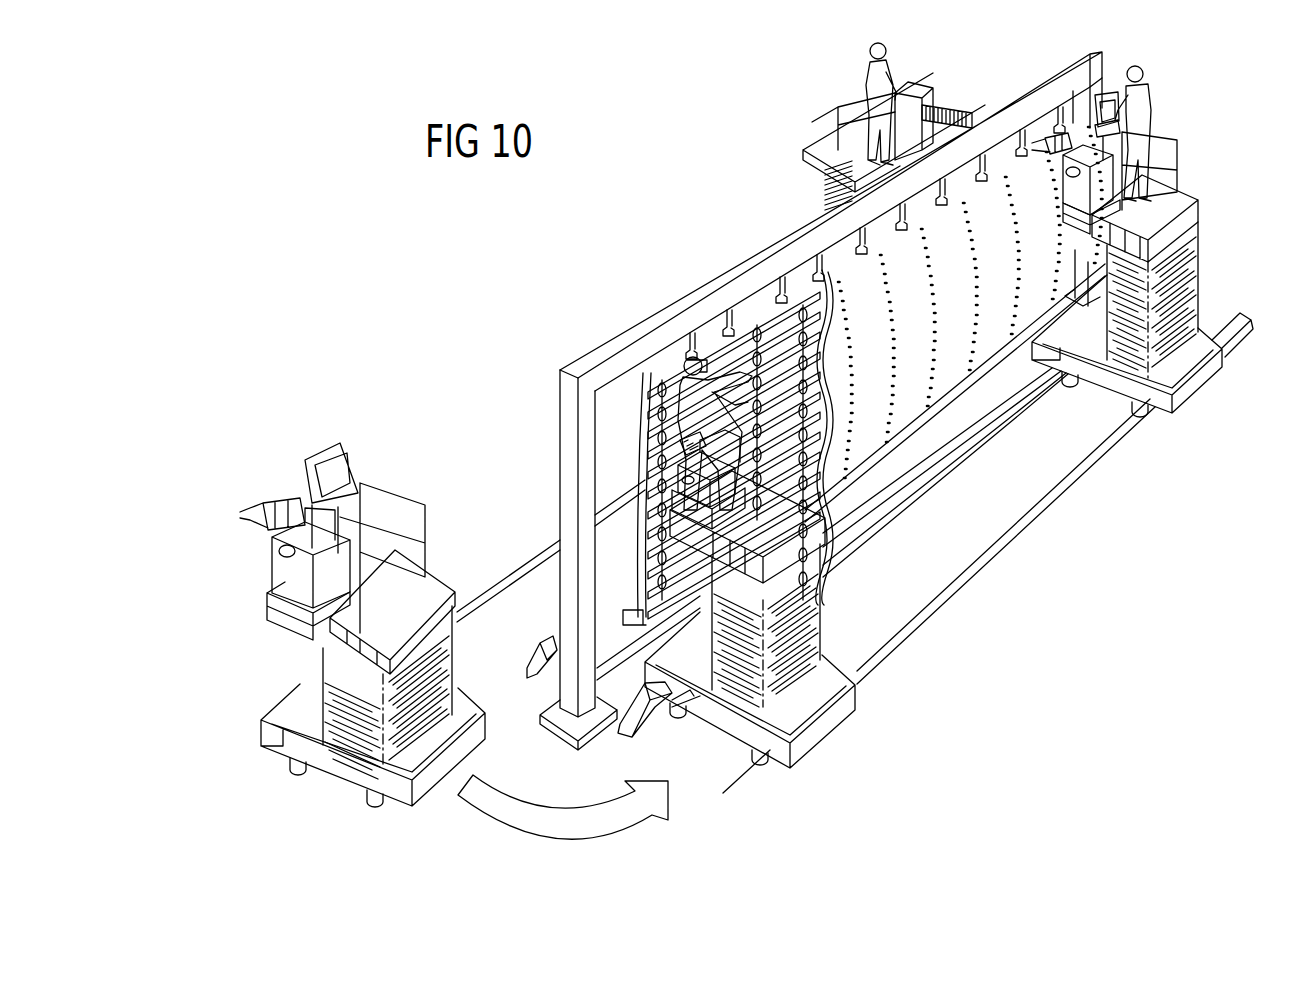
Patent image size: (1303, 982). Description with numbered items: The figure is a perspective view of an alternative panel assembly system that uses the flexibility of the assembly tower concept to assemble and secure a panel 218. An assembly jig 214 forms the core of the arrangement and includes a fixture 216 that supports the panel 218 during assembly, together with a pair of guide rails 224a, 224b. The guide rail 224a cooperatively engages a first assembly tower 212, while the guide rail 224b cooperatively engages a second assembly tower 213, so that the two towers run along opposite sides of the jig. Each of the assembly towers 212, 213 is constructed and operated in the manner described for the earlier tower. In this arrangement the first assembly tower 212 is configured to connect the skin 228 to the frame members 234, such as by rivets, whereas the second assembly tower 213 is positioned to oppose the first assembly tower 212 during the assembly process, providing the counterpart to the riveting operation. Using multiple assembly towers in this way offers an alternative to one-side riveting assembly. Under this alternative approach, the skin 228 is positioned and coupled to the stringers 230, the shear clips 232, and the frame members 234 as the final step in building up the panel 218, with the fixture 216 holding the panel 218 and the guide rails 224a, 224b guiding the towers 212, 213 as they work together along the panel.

The first assembly tower 212 is at (1163, 104).
The second assembly tower 213 is at (820, 135).
The assembly jig 214 is at (1037, 80).
The fixture 216 is at (1090, 50).
The panel 218 is at (636, 418).
The guide rail 224a is at (643, 715).
The guide rail 224b is at (537, 662).
The skin 228 is at (1022, 172).
The stringers 230 is at (762, 300).
The shear clips 232 is at (802, 300).
The frame members 234 is at (722, 330).